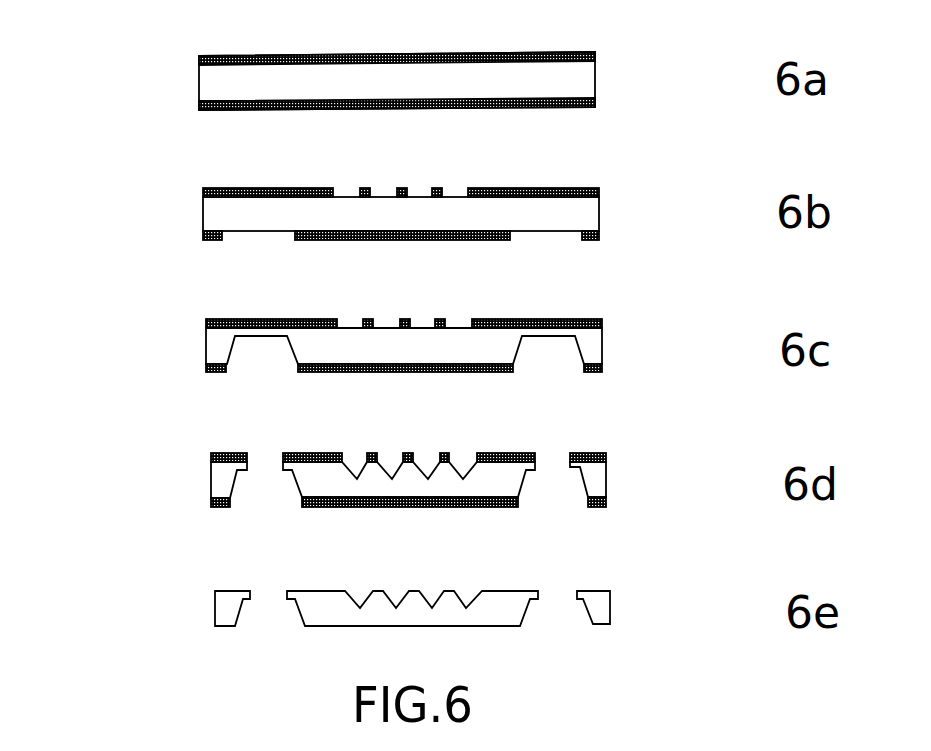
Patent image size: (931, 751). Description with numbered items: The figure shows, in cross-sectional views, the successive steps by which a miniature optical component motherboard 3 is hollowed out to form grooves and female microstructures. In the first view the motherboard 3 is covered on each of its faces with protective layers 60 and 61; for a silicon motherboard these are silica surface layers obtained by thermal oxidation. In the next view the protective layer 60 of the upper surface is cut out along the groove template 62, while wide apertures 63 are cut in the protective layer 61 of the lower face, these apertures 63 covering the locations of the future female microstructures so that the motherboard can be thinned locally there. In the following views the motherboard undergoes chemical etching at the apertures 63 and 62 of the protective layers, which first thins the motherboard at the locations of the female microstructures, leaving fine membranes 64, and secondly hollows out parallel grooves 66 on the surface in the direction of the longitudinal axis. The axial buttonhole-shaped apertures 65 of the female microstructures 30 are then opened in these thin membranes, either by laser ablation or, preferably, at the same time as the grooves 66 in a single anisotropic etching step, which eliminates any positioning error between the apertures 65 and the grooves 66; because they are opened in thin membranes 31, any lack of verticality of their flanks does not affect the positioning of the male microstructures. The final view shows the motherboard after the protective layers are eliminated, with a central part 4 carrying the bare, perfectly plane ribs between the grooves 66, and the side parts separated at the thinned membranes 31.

In FIG. 6a, the motherboard 3 is at (583, 80).
In FIG. 6a, the protective layer 60 is at (198, 61).
In FIG. 6a, the protective layer 61 is at (198, 102).
In FIG. 6b, the groove template 62 is at (345, 192).
In FIG. 6b, the apertures 63 is at (250, 238).
In FIG. 6c, the membranes 64 is at (255, 350).
In FIG. 6d, the apertures 65 is at (267, 472).
In FIG. 6d, the grooves 66 is at (423, 460).
In FIG. 6e, the female microstructures 30 is at (267, 598).
In FIG. 6e, the central part with V-grooves 4 is at (467, 600).
In FIG. 6e, the membranes 31 is at (562, 609).